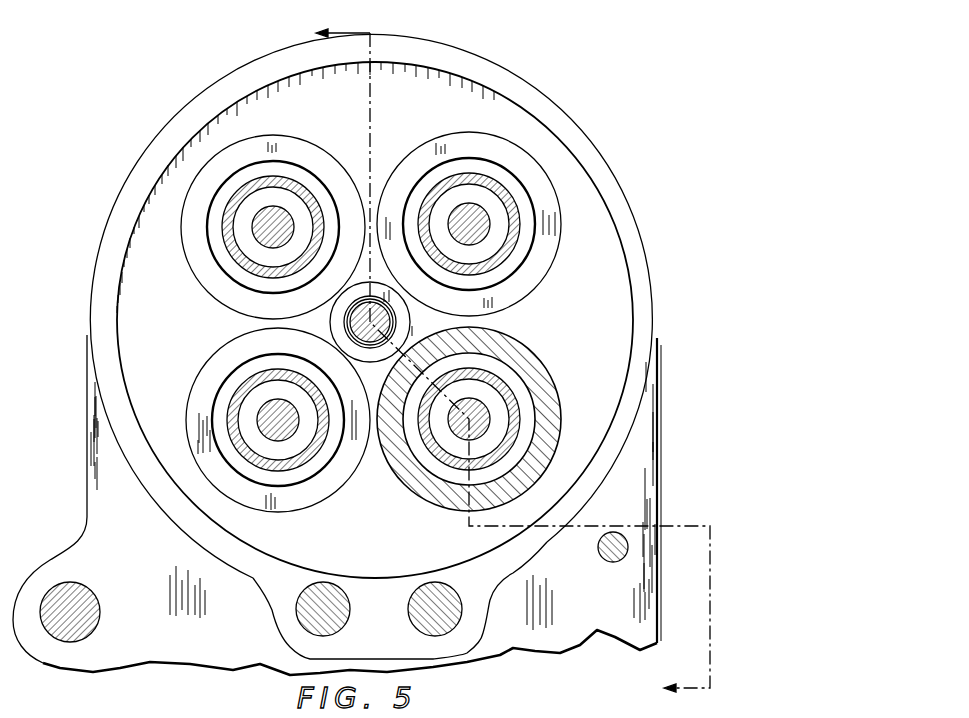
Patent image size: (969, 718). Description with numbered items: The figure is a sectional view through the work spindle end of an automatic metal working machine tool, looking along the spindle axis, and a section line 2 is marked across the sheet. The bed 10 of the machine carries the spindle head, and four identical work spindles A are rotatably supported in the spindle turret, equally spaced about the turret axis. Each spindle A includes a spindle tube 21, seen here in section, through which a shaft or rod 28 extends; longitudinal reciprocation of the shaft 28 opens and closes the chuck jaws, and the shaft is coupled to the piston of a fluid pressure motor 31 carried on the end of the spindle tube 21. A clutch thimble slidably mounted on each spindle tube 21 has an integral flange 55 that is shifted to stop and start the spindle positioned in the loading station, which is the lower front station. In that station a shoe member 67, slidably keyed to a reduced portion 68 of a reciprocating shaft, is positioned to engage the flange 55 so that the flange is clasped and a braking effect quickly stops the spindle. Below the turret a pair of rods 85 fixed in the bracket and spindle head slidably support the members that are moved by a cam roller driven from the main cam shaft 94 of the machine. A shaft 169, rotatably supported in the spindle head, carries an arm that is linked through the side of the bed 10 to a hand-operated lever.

The bed 10 is at (487, 640).
The spindle tube 21 is at (310, 187).
The shaft or rod 28 is at (268, 247).
The flange 55 is at (205, 282).
The shoe member 67 is at (408, 320).
The reduced portion 68 is at (346, 323).
The rods 85 is at (425, 623).
The main cam shaft 94 is at (75, 592).
The shaft 169 is at (607, 558).
The fluid pressure motor 31 is at (477, 711).
The section line 2- 2 is at (492, 364).
The work spindles A is at (377, 327).